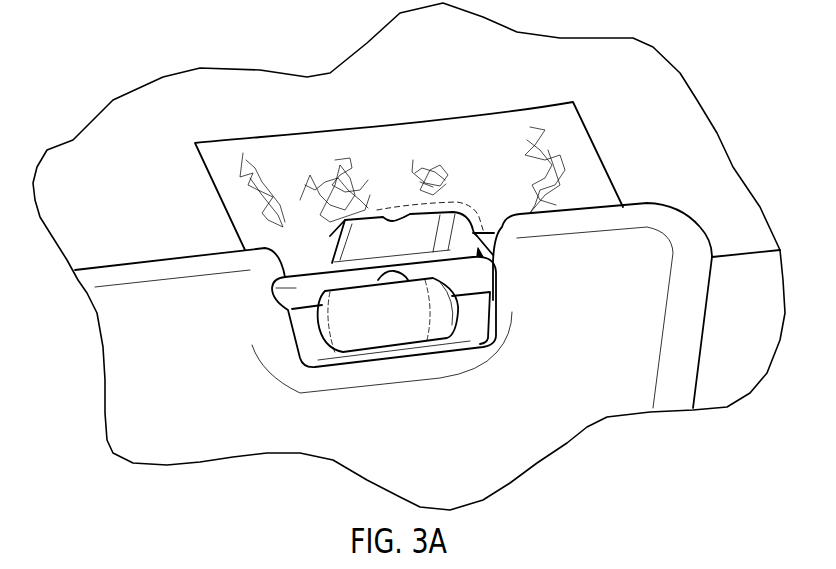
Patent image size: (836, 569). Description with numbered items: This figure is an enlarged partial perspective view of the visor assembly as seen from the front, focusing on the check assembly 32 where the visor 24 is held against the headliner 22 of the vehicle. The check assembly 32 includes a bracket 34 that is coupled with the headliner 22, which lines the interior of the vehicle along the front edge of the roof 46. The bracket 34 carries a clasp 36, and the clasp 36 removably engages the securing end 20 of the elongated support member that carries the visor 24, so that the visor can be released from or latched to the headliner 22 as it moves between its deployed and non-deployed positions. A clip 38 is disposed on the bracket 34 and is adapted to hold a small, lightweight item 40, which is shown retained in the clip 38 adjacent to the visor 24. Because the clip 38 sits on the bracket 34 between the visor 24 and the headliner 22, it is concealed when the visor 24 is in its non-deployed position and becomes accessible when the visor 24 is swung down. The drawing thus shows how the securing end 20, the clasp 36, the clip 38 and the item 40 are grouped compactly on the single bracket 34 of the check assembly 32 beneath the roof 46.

The securing end 20 is at (295, 288).
The headliner 22 is at (155, 144).
The visor 24 is at (216, 421).
The check assembly 32 is at (420, 232).
The bracket 34 is at (473, 328).
The clasp 36 is at (379, 273).
The clip 38 is at (380, 218).
The small, lightweight item 40 is at (227, 155).
The roof 46 is at (456, 55).